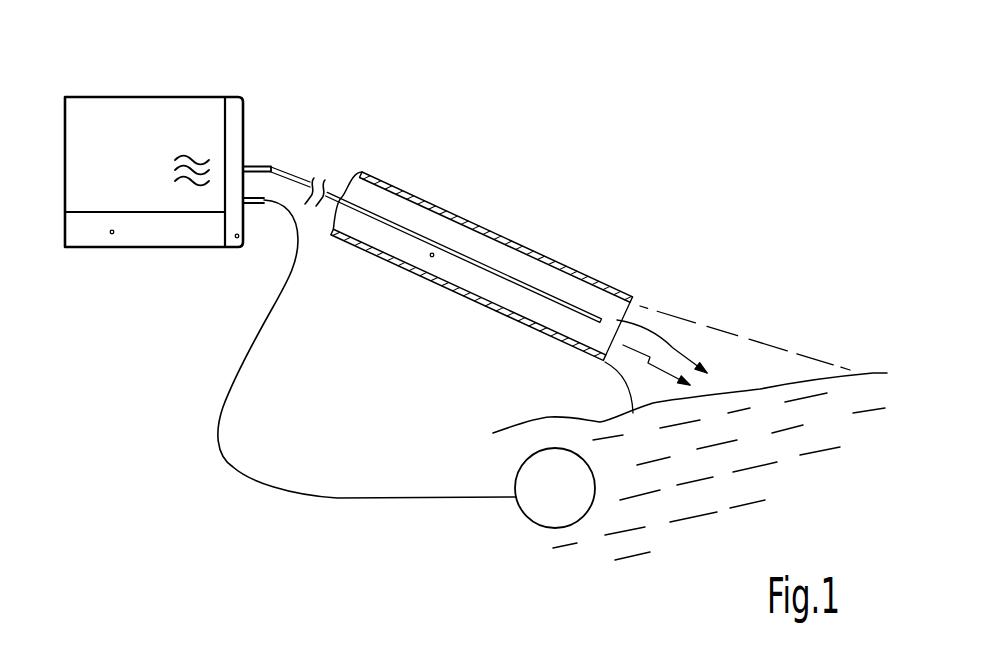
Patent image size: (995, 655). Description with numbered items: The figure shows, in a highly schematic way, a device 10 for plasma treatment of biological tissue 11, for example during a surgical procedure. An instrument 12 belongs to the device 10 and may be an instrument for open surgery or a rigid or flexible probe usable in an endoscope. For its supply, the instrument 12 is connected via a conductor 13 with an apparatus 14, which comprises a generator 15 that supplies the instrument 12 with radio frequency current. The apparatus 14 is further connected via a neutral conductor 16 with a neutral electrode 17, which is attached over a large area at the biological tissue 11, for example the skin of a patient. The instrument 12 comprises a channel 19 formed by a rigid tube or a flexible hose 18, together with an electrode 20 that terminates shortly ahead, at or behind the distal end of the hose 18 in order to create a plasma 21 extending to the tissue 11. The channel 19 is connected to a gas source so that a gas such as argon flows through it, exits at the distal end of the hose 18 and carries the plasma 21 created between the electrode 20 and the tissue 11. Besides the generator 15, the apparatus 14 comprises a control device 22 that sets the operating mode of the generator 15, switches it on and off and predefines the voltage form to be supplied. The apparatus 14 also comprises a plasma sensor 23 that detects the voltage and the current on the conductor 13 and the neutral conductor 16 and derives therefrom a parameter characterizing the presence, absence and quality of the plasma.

The device 10 is at (495, 155).
The biological tissue 11 is at (873, 373).
The instrument 12 is at (522, 232).
The conductor 13 is at (268, 167).
The apparatus 14 is at (290, 102).
The generator 15 is at (119, 145).
The neutral conductor 16 is at (247, 355).
The neutral electrode 17 is at (572, 505).
The hose 18 is at (563, 267).
The channel 19 is at (433, 257).
The electrode 20 is at (555, 305).
The plasma 21 is at (680, 340).
The control device 22 is at (111, 233).
The plasma sensor 23 is at (237, 238).